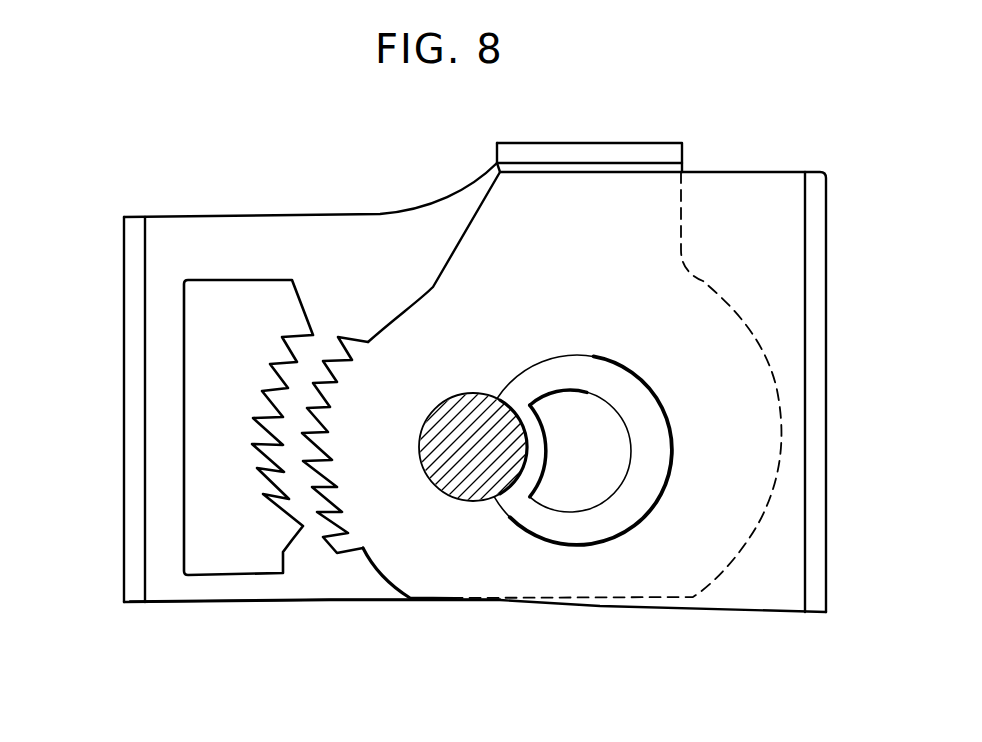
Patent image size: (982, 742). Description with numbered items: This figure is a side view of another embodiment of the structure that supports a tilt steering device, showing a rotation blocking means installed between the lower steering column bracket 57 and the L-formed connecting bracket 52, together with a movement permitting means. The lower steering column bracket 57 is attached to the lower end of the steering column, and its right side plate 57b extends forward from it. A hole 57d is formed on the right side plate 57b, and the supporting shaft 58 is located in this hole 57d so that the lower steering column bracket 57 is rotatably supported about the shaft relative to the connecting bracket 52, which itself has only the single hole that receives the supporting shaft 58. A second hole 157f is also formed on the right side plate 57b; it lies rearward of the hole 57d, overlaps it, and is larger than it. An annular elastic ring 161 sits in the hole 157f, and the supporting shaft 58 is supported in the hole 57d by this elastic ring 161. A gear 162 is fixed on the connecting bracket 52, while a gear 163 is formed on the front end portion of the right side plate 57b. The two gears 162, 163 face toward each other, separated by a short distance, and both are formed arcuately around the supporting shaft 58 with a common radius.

The L-formed connecting bracket 52 is at (317, 584).
The lower steering column bracket 57 is at (729, 617).
The right side plate 57b is at (762, 192).
The hole 57d is at (470, 395).
The supporting shaft 58 is at (442, 441).
The hole 157f is at (642, 394).
The annular elastic ring 161 is at (651, 482).
The gear 162 is at (262, 467).
The gear 163 is at (334, 477).